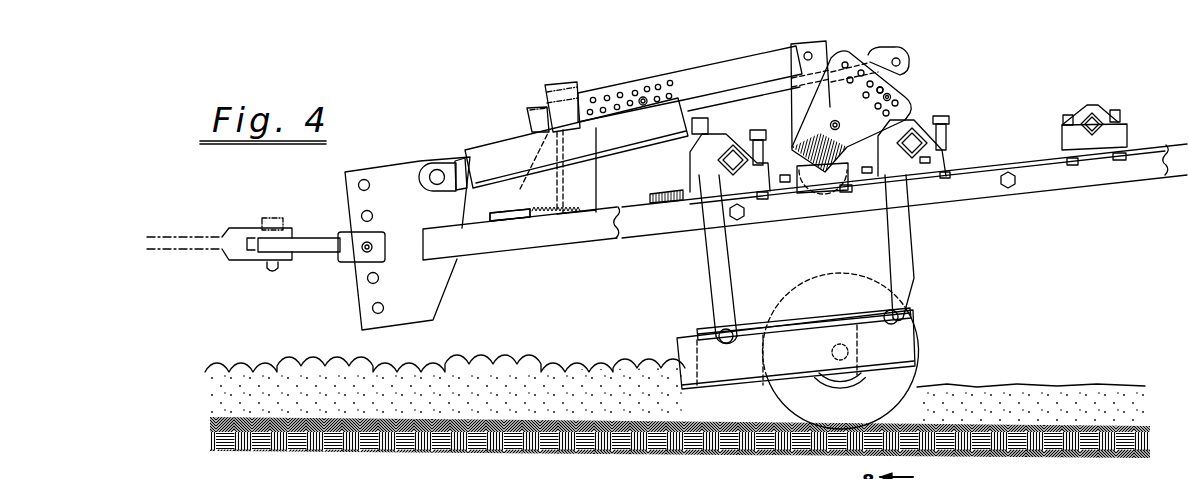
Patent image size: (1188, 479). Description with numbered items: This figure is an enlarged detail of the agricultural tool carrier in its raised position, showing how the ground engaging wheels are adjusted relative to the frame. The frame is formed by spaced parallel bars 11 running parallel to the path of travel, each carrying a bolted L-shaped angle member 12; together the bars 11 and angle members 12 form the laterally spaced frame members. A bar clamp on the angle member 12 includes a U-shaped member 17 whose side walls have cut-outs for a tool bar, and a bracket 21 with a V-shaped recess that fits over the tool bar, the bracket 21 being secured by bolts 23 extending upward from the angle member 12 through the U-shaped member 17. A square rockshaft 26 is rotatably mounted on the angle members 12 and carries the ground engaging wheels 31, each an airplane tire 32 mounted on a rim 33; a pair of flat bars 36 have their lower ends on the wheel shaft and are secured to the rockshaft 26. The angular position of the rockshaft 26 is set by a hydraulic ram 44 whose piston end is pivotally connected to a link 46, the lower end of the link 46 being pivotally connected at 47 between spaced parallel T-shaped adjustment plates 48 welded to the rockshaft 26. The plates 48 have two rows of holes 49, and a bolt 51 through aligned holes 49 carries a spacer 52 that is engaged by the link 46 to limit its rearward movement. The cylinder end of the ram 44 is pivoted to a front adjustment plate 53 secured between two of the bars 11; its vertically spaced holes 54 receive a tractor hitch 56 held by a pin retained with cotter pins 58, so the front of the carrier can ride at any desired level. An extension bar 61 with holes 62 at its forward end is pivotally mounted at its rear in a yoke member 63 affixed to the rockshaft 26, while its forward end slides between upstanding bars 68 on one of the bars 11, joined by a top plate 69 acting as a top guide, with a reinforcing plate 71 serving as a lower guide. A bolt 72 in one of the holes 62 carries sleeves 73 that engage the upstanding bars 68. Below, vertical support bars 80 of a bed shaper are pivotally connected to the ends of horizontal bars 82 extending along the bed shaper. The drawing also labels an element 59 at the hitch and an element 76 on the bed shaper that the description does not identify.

The bars 11 is at (598, 231).
The L-shaped angle member 12 is at (686, 218).
The U-shaped member 17 is at (1060, 143).
The bracket 21 is at (1097, 102).
The bolts 23 is at (1066, 113).
The rockshaft 26 is at (823, 182).
The ground engaging wheels 31 is at (925, 372).
The airplane tires 32 is at (866, 415).
The rim 33 is at (830, 387).
The flat bars 36 is at (840, 251).
The hydraulic ram 44 is at (634, 139).
The link 46 is at (907, 72).
The pivotal connection 47 is at (838, 123).
The T-shaped adjustment plates 48 is at (877, 98).
The holes 49 is at (861, 70).
The bolt 51 is at (893, 97).
The spacer 52 is at (893, 88).
The front adjustment plate 53 is at (390, 243).
The holes 54 is at (362, 214).
The tractor hitch 56 is at (313, 250).
The cotter pins 58 is at (358, 259).
The hitch pin 59 is at (372, 244).
The extension bar 61 is at (690, 71).
The holes 62 is at (620, 93).
The yoke member 63 is at (797, 50).
The upstanding bars 68 is at (581, 180).
The top plate 69 is at (557, 83).
The reinforcing plate 71 is at (540, 202).
The bolt 72 is at (647, 98).
The sleeves 73 is at (641, 97).
The roller housing 76 is at (693, 325).
The vertical support bars 80 is at (720, 254).
The horizontal bars 82 is at (745, 327).